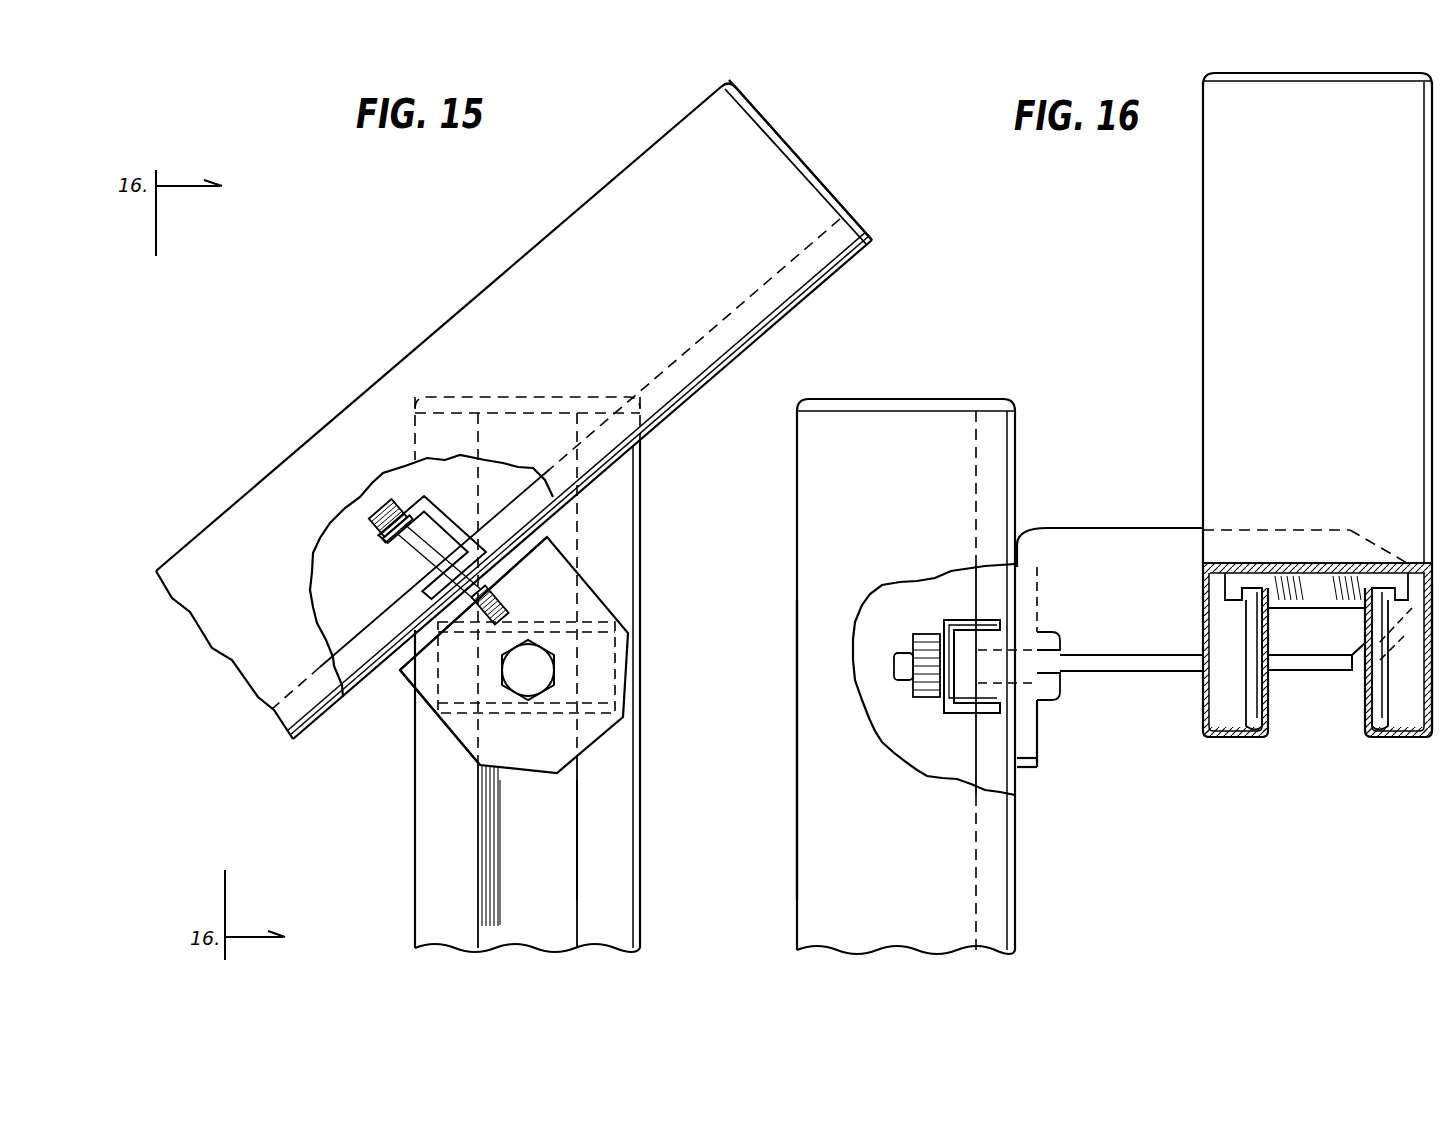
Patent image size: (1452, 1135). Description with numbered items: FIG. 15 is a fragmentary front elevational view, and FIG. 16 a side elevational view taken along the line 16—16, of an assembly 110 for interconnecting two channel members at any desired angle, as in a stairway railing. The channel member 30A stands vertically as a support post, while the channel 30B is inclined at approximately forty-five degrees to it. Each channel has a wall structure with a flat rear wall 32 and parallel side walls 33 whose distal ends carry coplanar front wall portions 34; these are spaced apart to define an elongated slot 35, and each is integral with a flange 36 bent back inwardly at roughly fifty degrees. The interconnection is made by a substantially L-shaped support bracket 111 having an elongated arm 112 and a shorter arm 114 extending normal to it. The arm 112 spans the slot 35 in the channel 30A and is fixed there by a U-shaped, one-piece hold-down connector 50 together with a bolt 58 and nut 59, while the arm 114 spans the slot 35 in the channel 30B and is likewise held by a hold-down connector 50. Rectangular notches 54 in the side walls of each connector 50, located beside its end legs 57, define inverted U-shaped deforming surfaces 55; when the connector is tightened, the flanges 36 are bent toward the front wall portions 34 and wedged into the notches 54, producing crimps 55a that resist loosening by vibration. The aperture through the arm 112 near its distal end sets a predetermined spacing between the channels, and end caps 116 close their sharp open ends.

In FIG. 15, the line 16— 16 is at (828, 182).
In FIG. 15, the channel member 30A is at (652, 892).
In FIG. 16, the channel member 30A is at (1040, 905).
In FIG. 15, the channel member 30B is at (212, 650).
In FIG. 16, the channel member 30B is at (1201, 306).
In FIG. 15, the rear wall 32 is at (495, 850).
In FIG. 16, the rear wall 32 is at (1222, 393).
In FIG. 15, the side walls 33 is at (330, 575).
In FIG. 16, the side walls 33 is at (808, 880).
In FIG. 15, the front wall portions 34 is at (590, 905).
In FIG. 16, the front wall portions 34 is at (1228, 738).
In FIG. 15, the elongated slot 35 is at (552, 838).
In FIG. 16, the elongated slot 35 is at (1313, 722).
In FIG. 15, the flange 36 is at (358, 646).
In FIG. 16, the flange 36 is at (988, 750).
In FIG. 15, the hold-down connector 50 is at (455, 500).
In FIG. 16, the hold-down connector 50 is at (946, 620).
In FIG. 16, the notches 54 is at (1376, 600).
In FIG. 16, the deforming surface 55 is at (1376, 590).
In FIG. 16, the crimps 55a is at (975, 718).
In FIG. 16, the end legs 57 is at (1233, 602).
In FIG. 15, the bolt 58 is at (531, 653).
In FIG. 16, the bolt 58 is at (896, 667).
In FIG. 15, the nut 59 is at (378, 535).
In FIG. 16, the nut 59 is at (925, 692).
In FIG. 15, the assembly 110 is at (376, 238).
In FIG. 16, the assembly 110 is at (1131, 215).
In FIG. 15, the support bracket 111 is at (600, 586).
In FIG. 16, the support bracket 111 is at (1115, 523).
In FIG. 15, the elongated arm 112 is at (403, 662).
In FIG. 16, the elongated arm 112 is at (1168, 530).
In FIG. 15, the shorter arm 114 is at (470, 735).
In FIG. 16, the shorter arm 114 is at (1032, 742).
In FIG. 16, the end caps 116 is at (906, 398).